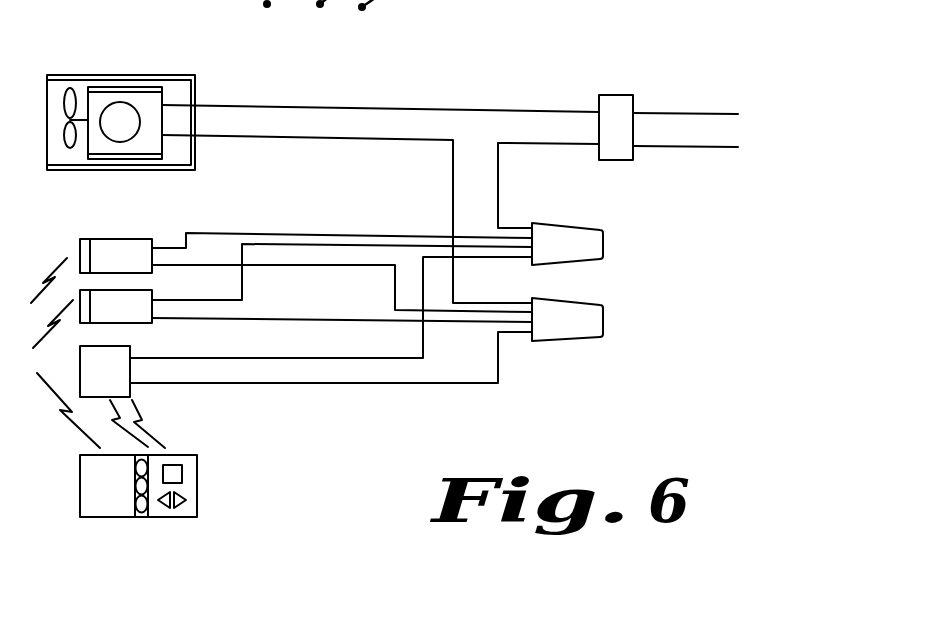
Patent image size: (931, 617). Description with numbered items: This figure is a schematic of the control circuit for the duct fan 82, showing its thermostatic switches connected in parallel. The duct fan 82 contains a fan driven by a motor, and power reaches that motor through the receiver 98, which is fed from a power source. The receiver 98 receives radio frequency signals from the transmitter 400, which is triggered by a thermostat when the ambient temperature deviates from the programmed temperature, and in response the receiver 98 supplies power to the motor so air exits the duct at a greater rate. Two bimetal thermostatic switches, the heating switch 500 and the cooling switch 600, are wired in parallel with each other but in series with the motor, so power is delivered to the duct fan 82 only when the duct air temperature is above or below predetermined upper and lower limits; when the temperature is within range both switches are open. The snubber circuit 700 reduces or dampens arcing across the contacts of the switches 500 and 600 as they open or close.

The duct fan 82 is at (83, 75).
The receiver 98 is at (623, 160).
The heating switch 500 is at (122, 239).
The cooling switch 600 is at (130, 313).
The snubber circuit 700 is at (130, 388).
The transmitter 400 is at (197, 484).